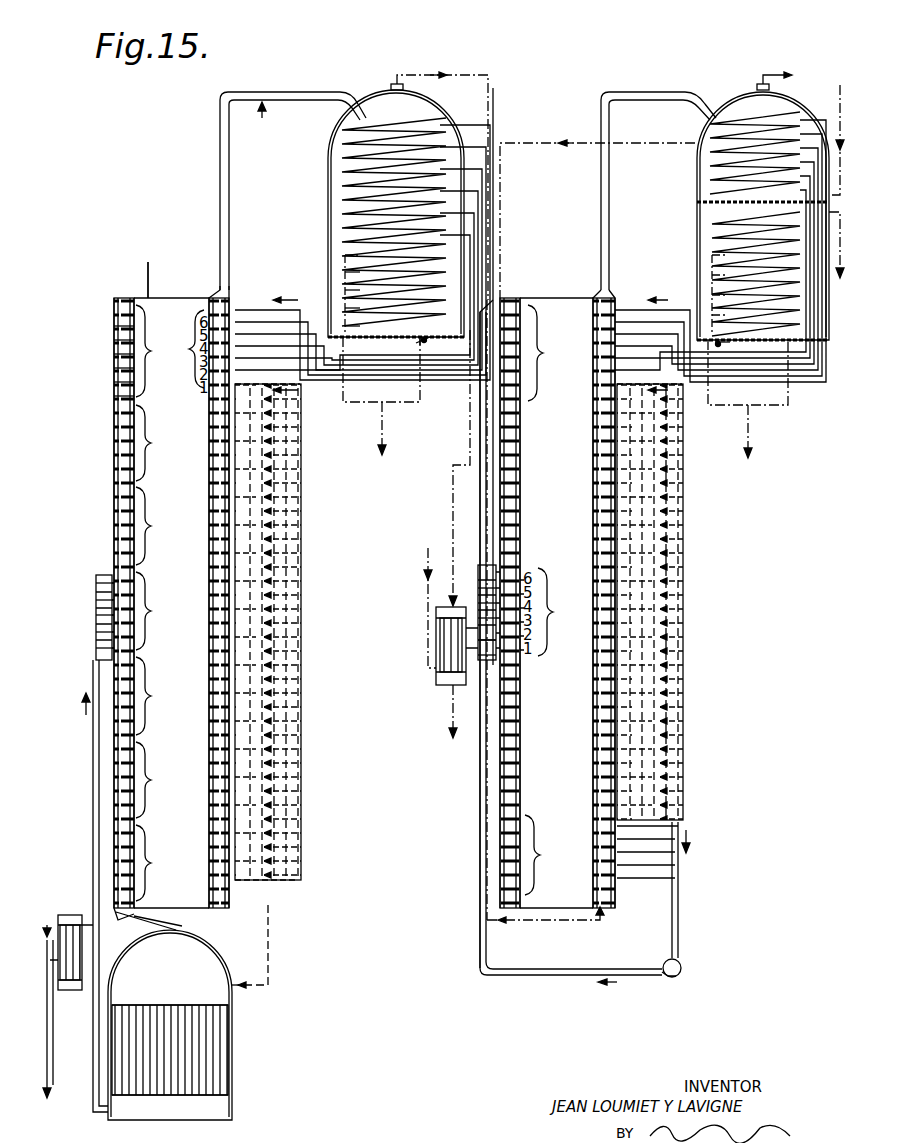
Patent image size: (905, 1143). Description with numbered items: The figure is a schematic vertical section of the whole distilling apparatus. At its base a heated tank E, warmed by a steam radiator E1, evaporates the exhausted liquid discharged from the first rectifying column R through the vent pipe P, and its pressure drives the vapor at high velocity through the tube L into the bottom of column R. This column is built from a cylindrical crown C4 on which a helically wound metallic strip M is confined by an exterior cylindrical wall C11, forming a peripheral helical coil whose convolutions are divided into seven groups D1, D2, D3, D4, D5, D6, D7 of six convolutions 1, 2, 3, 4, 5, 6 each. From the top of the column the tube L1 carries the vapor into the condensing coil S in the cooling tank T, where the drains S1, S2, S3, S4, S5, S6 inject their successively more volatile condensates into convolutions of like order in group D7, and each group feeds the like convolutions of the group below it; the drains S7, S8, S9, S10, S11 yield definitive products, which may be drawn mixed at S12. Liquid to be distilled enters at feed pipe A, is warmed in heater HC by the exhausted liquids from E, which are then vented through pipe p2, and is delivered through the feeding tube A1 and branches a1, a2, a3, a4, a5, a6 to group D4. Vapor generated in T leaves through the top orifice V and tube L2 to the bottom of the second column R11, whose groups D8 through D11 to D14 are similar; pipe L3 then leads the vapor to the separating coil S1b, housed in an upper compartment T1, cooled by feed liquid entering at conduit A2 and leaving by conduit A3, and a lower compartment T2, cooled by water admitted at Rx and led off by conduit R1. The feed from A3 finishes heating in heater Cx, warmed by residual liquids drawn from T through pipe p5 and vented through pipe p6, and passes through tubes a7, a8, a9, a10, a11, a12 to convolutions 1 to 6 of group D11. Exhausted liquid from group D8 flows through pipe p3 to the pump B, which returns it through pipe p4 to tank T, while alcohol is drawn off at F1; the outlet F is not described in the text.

The helically wound metallic strip M is at (114, 298).
The cylindrical crown C4 is at (148, 270).
The rectifying column R is at (170, 292).
The exterior cylindrical wall C11 is at (114, 438).
The convolution No. 1 is at (114, 396).
The convolution No. 2 is at (114, 382).
The convolution No. 3 is at (114, 368).
The convolution No. 4 is at (114, 354).
The convolution No. 5 is at (114, 340).
The convolution No. 6 is at (114, 326).
The first group of convolutions D1 is at (152, 863).
The second group of convolutions D2 is at (152, 780).
The third group of convolutions D3 is at (153, 696).
The fourth group of convolutions D4 is at (153, 611).
The fifth group of convolutions D5 is at (153, 526).
The sixth group of convolutions D6 is at (153, 443).
The seventh group of convolutions D7 is at (153, 351).
The bottom group of second column D8 is at (542, 855).
The eleventh group of convolutions D11 is at (559, 612).
The top group of second column D14 is at (549, 353).
The feed branch a1 is at (99, 652).
The feed branch a2 is at (96, 634).
The feed branch a3 is at (96, 618).
The feed branch a4 is at (96, 602).
The feed branch a5 is at (96, 586).
The feed branch a6 is at (104, 575).
The feed tube a7 is at (480, 655).
The feed tube a8 is at (486, 640).
The feed tube a9 is at (480, 618).
The feed tube a10 is at (480, 603).
The feed tube a11 is at (480, 588).
The feed tube a12 is at (482, 572).
The feed pipe A is at (46, 913).
The feeding tube A1 is at (83, 886).
The conduit A2 is at (840, 94).
The conduit A3 is at (428, 598).
The heater HC is at (70, 950).
The vent pipe p2 is at (58, 1019).
The pipe p3 is at (672, 925).
The pipe p4 is at (524, 982).
The pipe p5 is at (470, 422).
The vent pipe p6 is at (440, 714).
The tube L is at (182, 924).
The tube L1 is at (293, 191).
The tube L2 is at (490, 75).
The pipe L3 is at (601, 222).
The boiler tank E is at (236, 1050).
The radiator E1 is at (200, 1068).
The vent pipe P is at (268, 940).
The cooling tank T is at (328, 172).
The upper compartment T1 is at (752, 108).
The lower compartment T2 is at (708, 242).
The top orifice V is at (380, 92).
The drain s1 S1 is at (362, 247).
The separating coil S1 S1b is at (735, 180).
The drain s2 S2 is at (360, 257).
The drain s3 S3 is at (358, 266).
The drain s4 S4 is at (358, 278).
The drain s5 S5 is at (358, 286).
The drain s6 S6 is at (358, 302).
The drain s7 S7 is at (356, 258).
The drain s8 S8 is at (350, 270).
The drain s9 S9 is at (352, 288).
The drain s10 S10 is at (355, 306).
The drain s11 S11 is at (352, 323).
The mixed extraction outlet S12 is at (420, 343).
The alcohol outlet F is at (381, 405).
The alcohol draw-off F1 is at (748, 407).
The conduit R1 is at (840, 255).
The second rectifying column R11 is at (557, 585).
The water inlet Rx is at (717, 346).
The heater Cx is at (432, 679).
The pump B is at (680, 977).